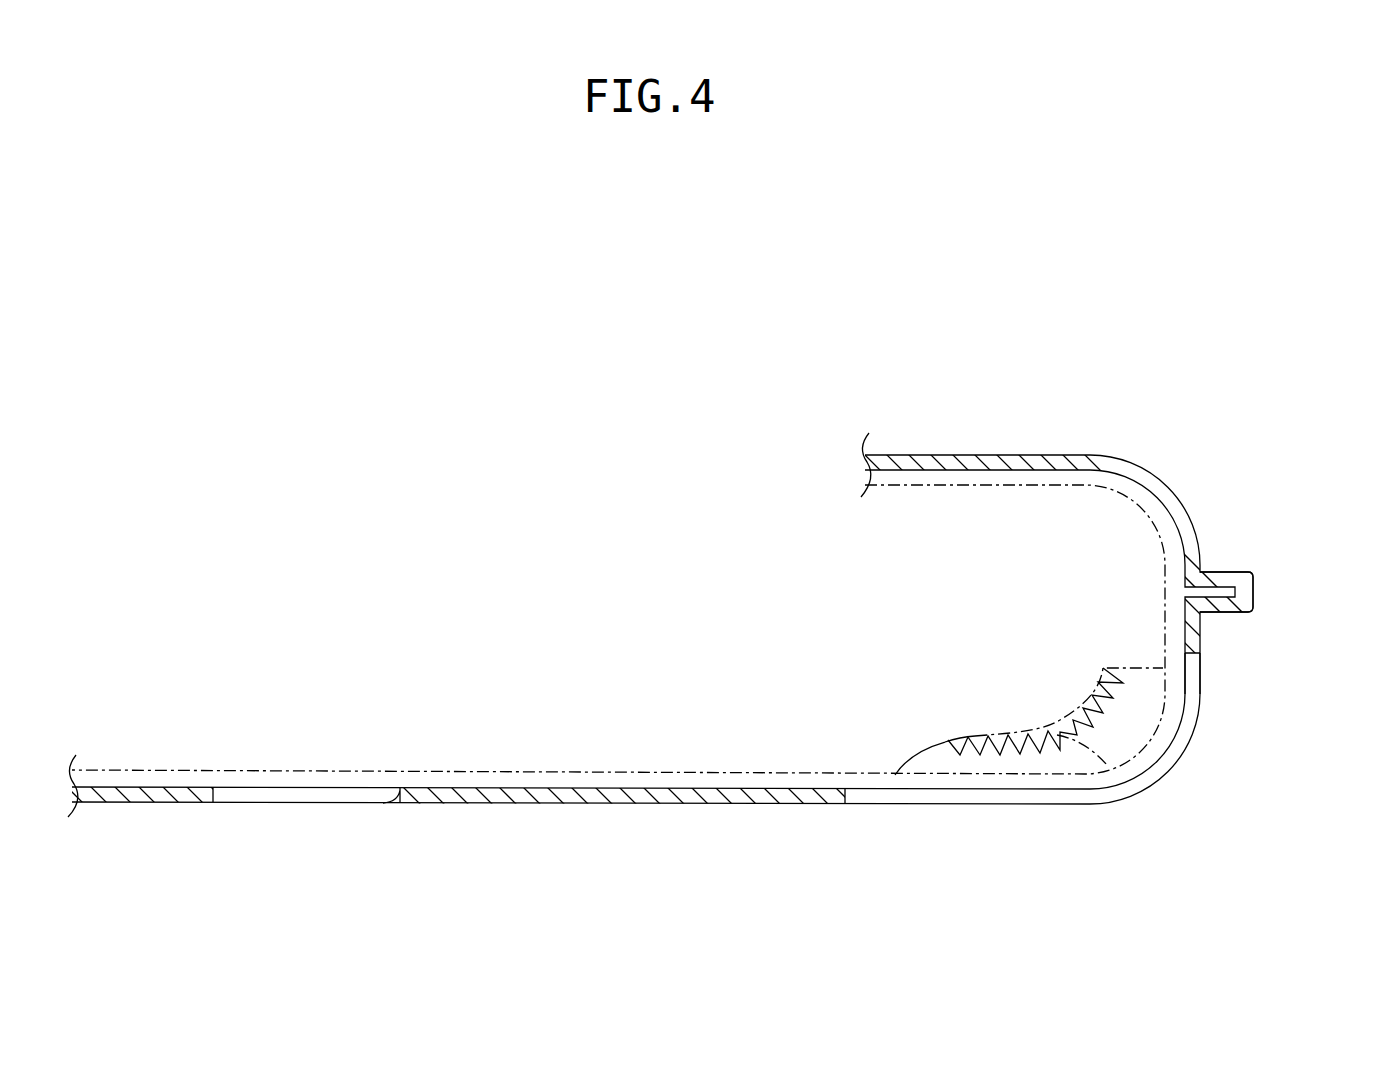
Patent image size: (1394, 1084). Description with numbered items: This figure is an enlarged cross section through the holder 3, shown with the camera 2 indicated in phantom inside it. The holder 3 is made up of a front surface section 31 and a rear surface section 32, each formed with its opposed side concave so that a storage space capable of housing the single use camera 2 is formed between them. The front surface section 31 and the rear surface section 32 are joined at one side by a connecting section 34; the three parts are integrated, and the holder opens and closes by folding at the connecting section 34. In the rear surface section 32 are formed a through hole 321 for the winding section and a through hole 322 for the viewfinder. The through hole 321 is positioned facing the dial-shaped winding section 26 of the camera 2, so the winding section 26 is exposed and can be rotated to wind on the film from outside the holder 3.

The camera 2 is at (1135, 503).
The holder 3 is at (983, 427).
The winding section 26 is at (1107, 767).
The front surface section 31 is at (1039, 455).
The rear surface section 32 is at (710, 805).
The connecting section 34 is at (1256, 582).
The through hole for the winding section 321 is at (1192, 655).
The through hole for the viewfinder 322 is at (380, 803).